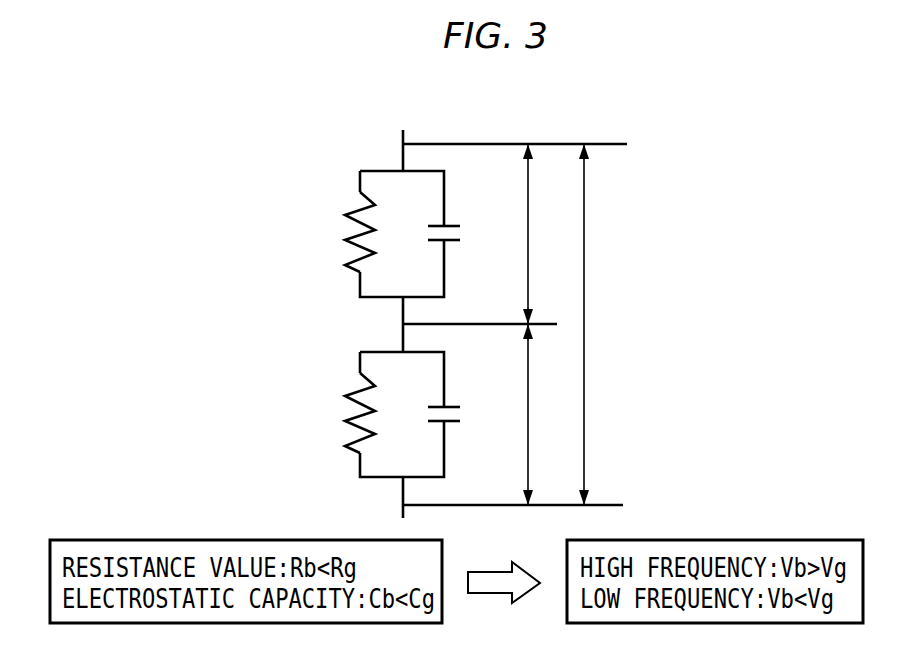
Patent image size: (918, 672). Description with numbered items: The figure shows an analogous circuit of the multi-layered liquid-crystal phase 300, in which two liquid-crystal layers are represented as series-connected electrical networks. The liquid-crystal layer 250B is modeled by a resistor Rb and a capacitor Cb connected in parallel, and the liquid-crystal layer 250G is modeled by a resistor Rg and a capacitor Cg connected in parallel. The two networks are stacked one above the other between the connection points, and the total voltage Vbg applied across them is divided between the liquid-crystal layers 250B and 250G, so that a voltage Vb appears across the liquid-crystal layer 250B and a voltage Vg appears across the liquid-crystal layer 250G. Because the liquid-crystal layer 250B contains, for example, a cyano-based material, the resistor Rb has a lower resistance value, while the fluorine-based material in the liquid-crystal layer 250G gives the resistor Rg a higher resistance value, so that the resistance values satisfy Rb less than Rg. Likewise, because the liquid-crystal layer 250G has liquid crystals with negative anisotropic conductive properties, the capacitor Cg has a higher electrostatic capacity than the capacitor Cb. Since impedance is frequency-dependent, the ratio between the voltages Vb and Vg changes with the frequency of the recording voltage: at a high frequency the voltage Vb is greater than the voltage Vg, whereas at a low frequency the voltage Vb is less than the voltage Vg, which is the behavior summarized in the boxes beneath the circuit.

The multi-layered liquid-crystal phase 300 is at (226, 167).
The liquid-crystal layer 250B is at (290, 225).
The liquid-crystal layer 250G is at (291, 407).
The resistor Rb is at (352, 214).
The capacitor Cb is at (461, 240).
The resistor Rg is at (352, 395).
The capacitor Cg is at (461, 421).
The voltage Vb is at (535, 234).
The voltage Vg is at (526, 414).
The voltage Vbg is at (597, 324).